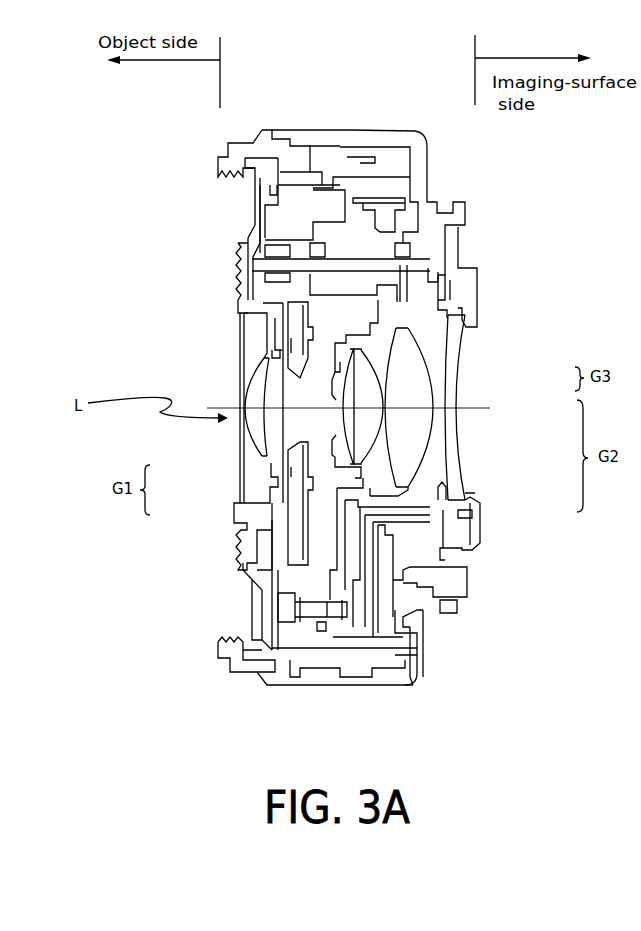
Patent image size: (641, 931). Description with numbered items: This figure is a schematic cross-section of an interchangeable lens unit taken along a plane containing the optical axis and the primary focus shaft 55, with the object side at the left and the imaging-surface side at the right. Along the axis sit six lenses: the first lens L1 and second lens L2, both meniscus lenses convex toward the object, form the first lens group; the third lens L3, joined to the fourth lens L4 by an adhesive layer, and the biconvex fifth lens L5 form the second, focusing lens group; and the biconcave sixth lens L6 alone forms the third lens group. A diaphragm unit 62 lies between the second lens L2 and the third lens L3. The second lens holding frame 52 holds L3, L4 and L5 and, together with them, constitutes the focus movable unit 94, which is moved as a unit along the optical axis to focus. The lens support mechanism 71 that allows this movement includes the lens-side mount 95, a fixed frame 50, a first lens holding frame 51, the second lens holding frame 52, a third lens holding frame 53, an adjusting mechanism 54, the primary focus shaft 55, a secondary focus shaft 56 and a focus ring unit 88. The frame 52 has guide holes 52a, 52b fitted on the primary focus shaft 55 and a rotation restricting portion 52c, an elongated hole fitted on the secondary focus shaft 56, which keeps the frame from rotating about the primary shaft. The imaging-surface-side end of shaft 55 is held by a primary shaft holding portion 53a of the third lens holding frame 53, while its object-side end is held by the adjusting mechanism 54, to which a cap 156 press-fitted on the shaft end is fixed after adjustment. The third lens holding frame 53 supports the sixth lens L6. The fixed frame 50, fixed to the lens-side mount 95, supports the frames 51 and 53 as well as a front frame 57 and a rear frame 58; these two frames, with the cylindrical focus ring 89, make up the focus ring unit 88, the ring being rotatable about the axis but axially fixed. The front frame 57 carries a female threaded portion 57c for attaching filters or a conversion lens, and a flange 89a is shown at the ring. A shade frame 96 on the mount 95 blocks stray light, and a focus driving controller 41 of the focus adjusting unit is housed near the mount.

The focus ring 89 is at (303, 138).
The focus ring unit 88 is at (315, 125).
The rear frame 58 is at (387, 137).
The cover flange 89a is at (310, 163).
The lens support mechanism 71 is at (373, 242).
The cap 156 is at (262, 243).
The adjusting mechanism 54 is at (270, 253).
The primary focus shaft 55 is at (313, 257).
The guide hole 52a is at (260, 268).
The guide hole 52b is at (405, 256).
The primary shaft holding portion 53a is at (432, 282).
The second lens holding frame 52 is at (388, 306).
The third lens holding frame 53 is at (430, 513).
The shade frame 96 is at (473, 515).
The first lens L1 is at (250, 460).
The second lens L2 is at (275, 418).
The third lens L3 is at (347, 442).
The fourth lens L4 is at (365, 428).
The fifth lens L5 is at (415, 383).
The sixth lens L6 is at (452, 363).
The diaphragm unit 62 is at (290, 330).
The focus movable unit 94 is at (323, 505).
The first lens holding frame 51 is at (257, 563).
The front frame 57 is at (237, 665).
The female threaded portion 57c is at (220, 640).
The fixed frame 50 is at (333, 660).
The secondary focus shaft 56 is at (309, 613).
The rotation restricting portion 52c is at (328, 621).
The focus driving controller 41 is at (387, 602).
The lens-side mount 95 is at (413, 645).